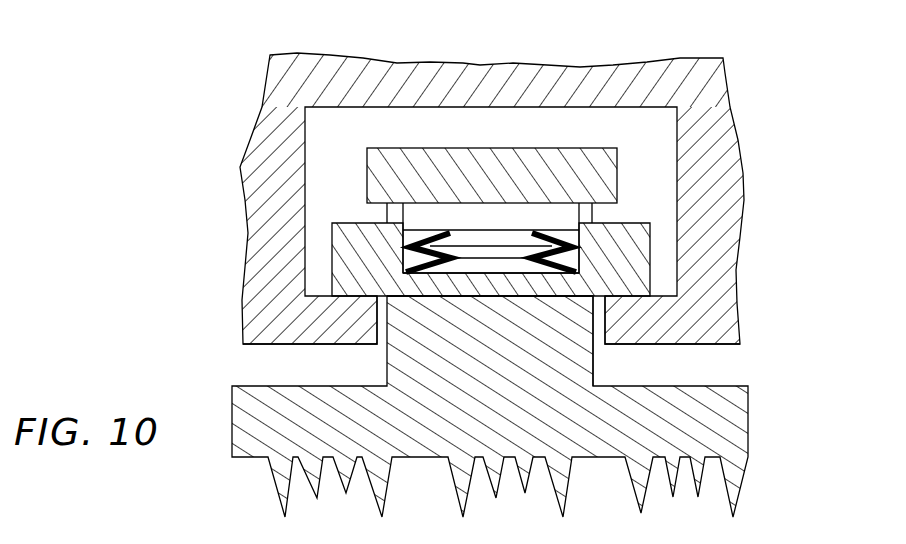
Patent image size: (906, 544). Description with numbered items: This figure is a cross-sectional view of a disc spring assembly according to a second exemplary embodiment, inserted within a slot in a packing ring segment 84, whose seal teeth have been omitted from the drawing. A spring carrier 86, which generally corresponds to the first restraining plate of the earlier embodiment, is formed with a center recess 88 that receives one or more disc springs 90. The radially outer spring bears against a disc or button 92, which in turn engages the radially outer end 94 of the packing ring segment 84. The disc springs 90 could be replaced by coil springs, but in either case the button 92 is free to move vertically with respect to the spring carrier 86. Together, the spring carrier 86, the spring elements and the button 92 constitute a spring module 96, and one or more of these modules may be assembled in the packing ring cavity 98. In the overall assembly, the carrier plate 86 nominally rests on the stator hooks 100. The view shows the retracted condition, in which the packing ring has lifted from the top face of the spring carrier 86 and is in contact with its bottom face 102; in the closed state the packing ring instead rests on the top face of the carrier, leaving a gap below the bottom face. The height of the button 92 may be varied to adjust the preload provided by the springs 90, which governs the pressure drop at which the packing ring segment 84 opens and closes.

The packing ring segment 84 is at (259, 458).
The spring carrier 86 is at (358, 252).
The center recess 88 is at (568, 260).
The disc springs 90 is at (480, 240).
The button 92 is at (512, 218).
The radially outer end 94 is at (392, 168).
The spring module 96 is at (652, 261).
The packing ring cavity 98 is at (637, 133).
The stator hooks 100 is at (323, 330).
The bottom face 102 is at (588, 317).